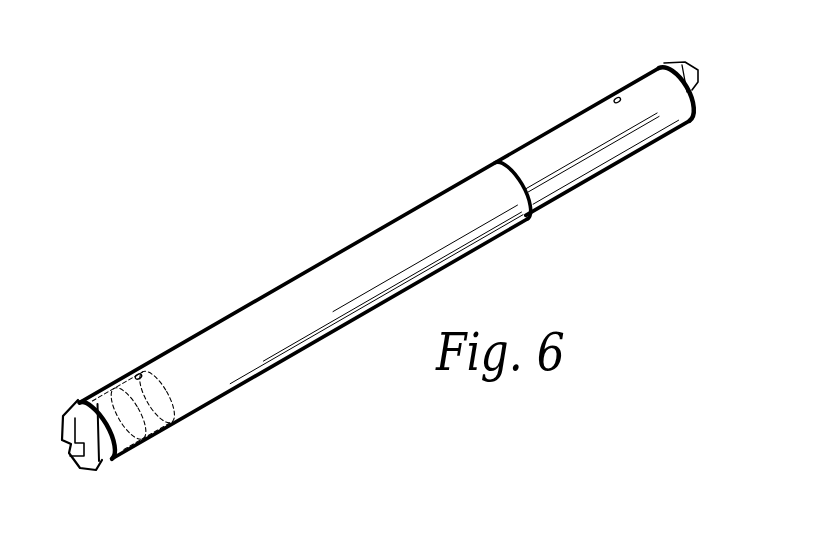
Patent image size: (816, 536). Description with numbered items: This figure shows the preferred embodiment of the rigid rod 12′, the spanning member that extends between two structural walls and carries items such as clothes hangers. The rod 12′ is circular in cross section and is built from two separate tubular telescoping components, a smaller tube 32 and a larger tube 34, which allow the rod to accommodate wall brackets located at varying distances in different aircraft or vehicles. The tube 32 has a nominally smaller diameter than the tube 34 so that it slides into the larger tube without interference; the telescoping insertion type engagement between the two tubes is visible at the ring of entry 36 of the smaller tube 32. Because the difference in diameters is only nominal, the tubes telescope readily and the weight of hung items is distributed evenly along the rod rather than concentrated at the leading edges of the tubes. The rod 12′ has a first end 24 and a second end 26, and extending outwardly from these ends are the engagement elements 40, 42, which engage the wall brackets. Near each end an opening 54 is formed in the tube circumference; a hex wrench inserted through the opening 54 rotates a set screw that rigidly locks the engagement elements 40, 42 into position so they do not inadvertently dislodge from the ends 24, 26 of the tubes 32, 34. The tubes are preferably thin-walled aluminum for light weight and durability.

The rigid rod 12′ is at (316, 275).
The first end 24 is at (79, 404).
The second end 26 is at (664, 67).
The tube 32 is at (604, 174).
The tube 34 is at (311, 342).
The ring of entry 36 is at (496, 161).
The engagement element 40 is at (72, 461).
The engagement element 42 is at (702, 73).
The opening 54 is at (140, 373).